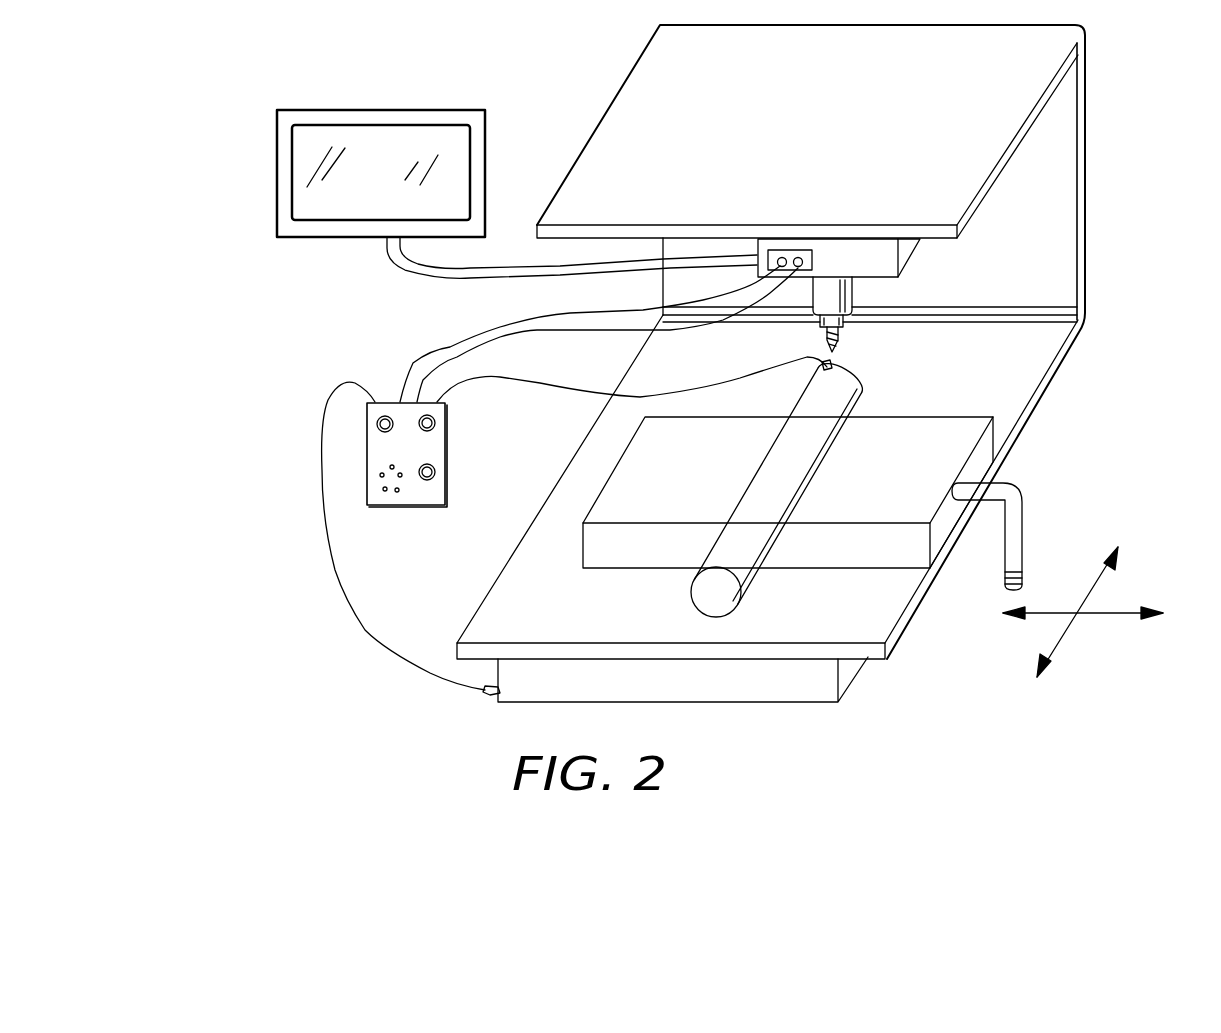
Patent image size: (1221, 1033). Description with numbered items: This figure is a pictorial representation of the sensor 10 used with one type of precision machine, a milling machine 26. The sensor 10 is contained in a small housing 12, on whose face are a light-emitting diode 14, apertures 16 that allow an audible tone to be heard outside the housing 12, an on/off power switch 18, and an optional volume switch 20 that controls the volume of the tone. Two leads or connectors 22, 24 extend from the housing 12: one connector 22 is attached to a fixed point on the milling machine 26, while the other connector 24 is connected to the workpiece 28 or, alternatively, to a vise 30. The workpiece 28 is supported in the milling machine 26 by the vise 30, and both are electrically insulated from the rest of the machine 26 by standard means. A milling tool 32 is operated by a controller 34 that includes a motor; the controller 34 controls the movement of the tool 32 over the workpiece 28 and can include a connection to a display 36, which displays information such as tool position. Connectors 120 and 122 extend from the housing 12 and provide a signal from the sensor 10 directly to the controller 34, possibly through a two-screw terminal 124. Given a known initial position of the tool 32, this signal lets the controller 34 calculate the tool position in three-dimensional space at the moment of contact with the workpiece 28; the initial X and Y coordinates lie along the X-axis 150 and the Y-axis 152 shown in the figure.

The sensor 10 is at (410, 472).
The housing 12 is at (424, 510).
The light-emitting diode (LED) 14 is at (433, 478).
The apertures 16 is at (400, 500).
The on/off power switch 18 is at (382, 433).
The volume switch 20 is at (437, 430).
The connector 22 is at (385, 640).
The connector 24 is at (500, 377).
The milling machine 26 is at (1118, 145).
The workpiece 28 is at (733, 558).
The vise 30 is at (962, 422).
The milling tool 32 is at (840, 337).
The controller 34 is at (903, 255).
The display 36 is at (285, 237).
The connector 120 is at (490, 320).
The connector 122 is at (548, 333).
The two-screw terminal 124 is at (808, 250).
The X-axis 150 is at (1105, 610).
The Y-axis 152 is at (1060, 647).